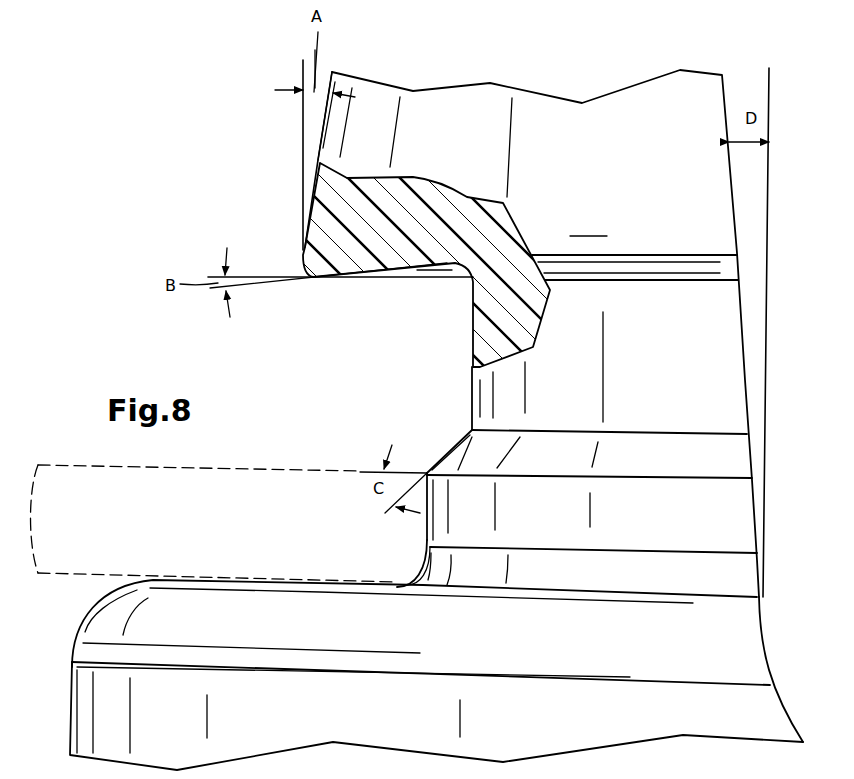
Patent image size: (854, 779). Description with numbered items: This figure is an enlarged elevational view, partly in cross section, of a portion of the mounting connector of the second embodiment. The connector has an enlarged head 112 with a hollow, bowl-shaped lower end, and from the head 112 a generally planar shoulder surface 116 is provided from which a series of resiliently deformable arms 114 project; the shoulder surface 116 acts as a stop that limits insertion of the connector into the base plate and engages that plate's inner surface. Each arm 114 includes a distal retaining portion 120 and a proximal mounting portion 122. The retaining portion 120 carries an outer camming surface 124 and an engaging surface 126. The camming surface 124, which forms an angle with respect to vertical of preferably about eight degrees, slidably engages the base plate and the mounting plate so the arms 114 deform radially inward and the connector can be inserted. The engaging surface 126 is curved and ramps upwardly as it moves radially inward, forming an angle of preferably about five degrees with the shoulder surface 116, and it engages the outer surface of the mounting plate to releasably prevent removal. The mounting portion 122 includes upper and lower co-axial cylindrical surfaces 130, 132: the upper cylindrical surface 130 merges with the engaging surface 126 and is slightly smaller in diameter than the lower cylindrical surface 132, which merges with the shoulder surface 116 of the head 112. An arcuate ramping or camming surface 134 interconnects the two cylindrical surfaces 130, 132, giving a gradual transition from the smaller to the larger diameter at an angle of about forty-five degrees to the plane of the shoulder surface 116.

The enlarged head 112 is at (110, 697).
The resiliently deformable arm 114 is at (528, 140).
The shoulder surface 116 is at (297, 583).
The retaining portion 120 is at (200, 213).
The mounting portion 122 is at (300, 430).
The camming surface 124 is at (317, 148).
The engaging surface 126 is at (393, 268).
The upper cylindrical surface 130 is at (487, 390).
The lower cylindrical surface 132 is at (425, 528).
The ramping surface 134 is at (452, 447).